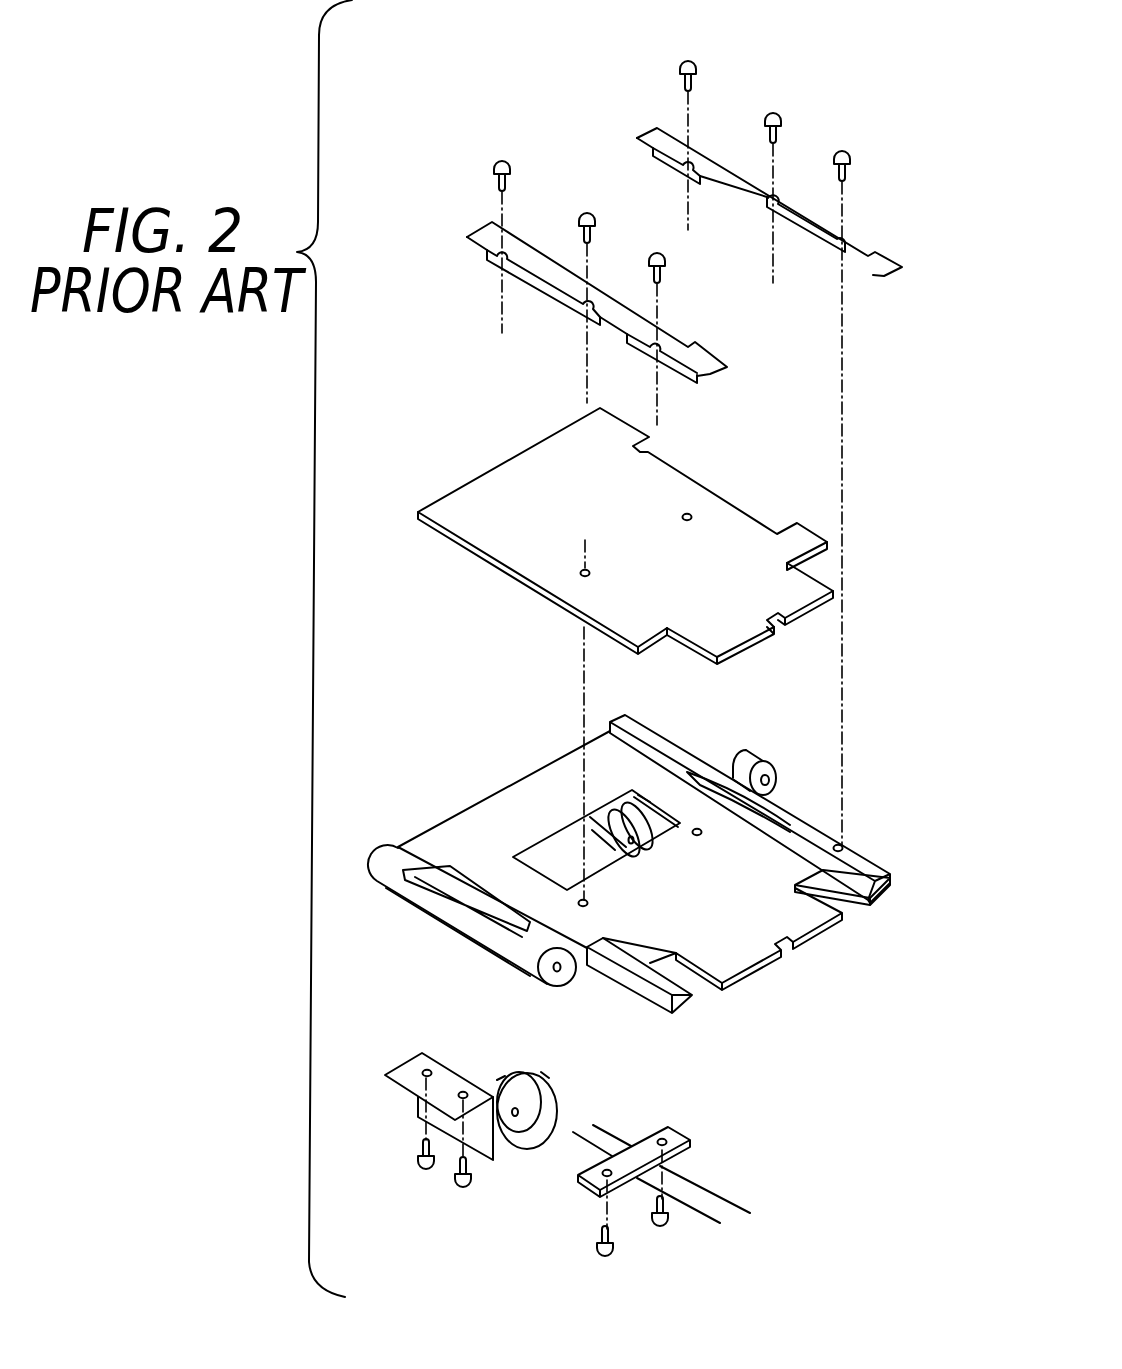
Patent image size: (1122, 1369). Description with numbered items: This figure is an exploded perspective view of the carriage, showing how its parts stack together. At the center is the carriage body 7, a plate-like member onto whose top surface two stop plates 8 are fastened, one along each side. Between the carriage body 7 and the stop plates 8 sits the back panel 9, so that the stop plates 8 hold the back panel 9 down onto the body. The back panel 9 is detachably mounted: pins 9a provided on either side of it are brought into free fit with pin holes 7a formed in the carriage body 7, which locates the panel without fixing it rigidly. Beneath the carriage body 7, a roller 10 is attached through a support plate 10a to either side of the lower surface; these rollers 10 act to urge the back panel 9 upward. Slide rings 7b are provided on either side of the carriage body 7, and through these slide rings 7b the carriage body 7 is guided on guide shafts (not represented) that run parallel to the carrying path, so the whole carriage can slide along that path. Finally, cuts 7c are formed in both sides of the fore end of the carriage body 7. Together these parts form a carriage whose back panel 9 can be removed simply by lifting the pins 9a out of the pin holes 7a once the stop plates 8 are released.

The carriage body 7 is at (636, 950).
The pin holes 7a is at (583, 908).
The slide rings 7b is at (433, 906).
The cuts 7c is at (830, 890).
The stop plates 8 is at (535, 257).
The back panel 9 is at (625, 527).
The pins 9a is at (690, 514).
The rollers 10 is at (640, 800).
The support plate 10a is at (403, 1080).